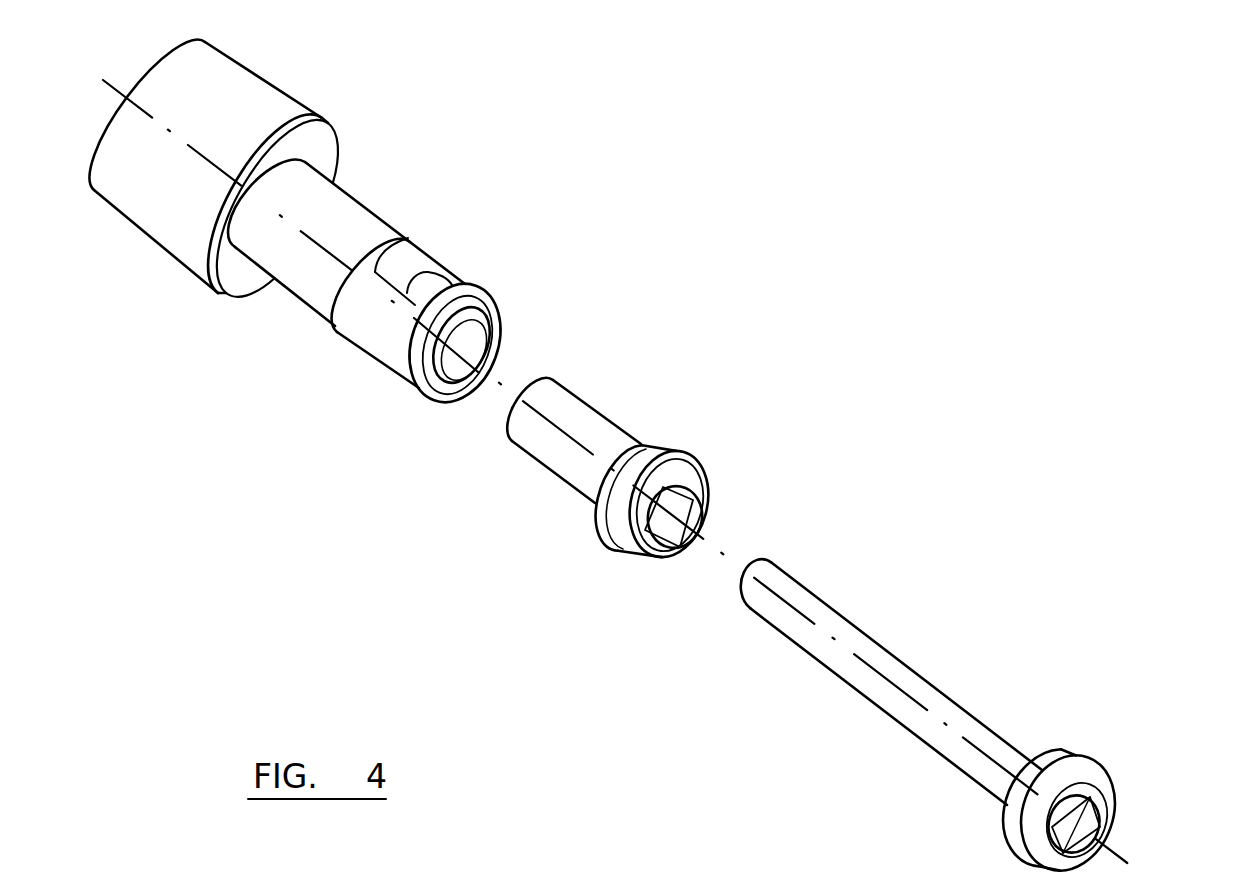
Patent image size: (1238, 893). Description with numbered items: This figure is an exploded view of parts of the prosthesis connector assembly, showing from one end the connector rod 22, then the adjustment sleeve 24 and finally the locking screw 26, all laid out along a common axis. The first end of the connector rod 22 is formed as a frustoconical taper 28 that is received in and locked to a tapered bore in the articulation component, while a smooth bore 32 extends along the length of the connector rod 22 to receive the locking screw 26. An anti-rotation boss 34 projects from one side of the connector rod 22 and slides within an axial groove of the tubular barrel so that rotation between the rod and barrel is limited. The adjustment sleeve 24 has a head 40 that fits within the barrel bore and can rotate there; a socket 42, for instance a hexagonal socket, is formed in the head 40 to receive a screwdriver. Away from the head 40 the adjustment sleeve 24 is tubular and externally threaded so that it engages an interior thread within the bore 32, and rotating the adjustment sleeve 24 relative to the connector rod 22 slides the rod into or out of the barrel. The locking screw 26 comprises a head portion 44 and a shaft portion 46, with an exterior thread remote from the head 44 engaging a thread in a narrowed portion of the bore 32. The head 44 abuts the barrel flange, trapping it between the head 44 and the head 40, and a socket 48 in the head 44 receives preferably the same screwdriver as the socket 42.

The connector rod 22 is at (339, 218).
The adjustment sleeve 24 is at (584, 420).
The locking screw 26 is at (883, 660).
The frustoconical taper 28 is at (180, 215).
The smooth bore 32 is at (472, 346).
The anti-rotation boss 34 is at (408, 263).
The head of adjustment sleeve 40 is at (670, 458).
The socket 42 is at (695, 500).
The head portion 44 is at (1068, 755).
The shaft portion 46 is at (840, 662).
The socket 48 is at (1083, 820).